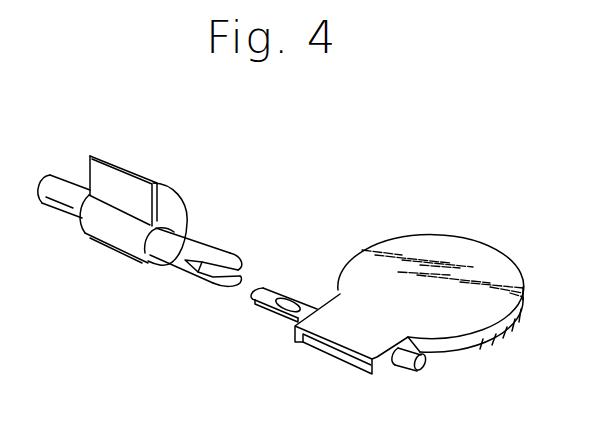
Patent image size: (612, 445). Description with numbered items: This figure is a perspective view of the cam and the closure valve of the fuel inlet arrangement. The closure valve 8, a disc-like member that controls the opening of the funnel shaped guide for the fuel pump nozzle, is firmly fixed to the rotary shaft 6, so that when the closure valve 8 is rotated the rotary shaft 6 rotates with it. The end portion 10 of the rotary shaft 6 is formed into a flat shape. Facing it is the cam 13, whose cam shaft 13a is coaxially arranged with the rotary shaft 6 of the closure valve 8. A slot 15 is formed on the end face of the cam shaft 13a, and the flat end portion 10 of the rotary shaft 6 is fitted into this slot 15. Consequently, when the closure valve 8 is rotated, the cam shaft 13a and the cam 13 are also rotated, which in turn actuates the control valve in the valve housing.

The cam 13 is at (173, 193).
The cam shaft 13a is at (203, 243).
The slot 15 is at (193, 274).
The end portion 10 is at (280, 289).
The closure valve 8 is at (463, 248).
The rotary shaft 6 is at (401, 366).